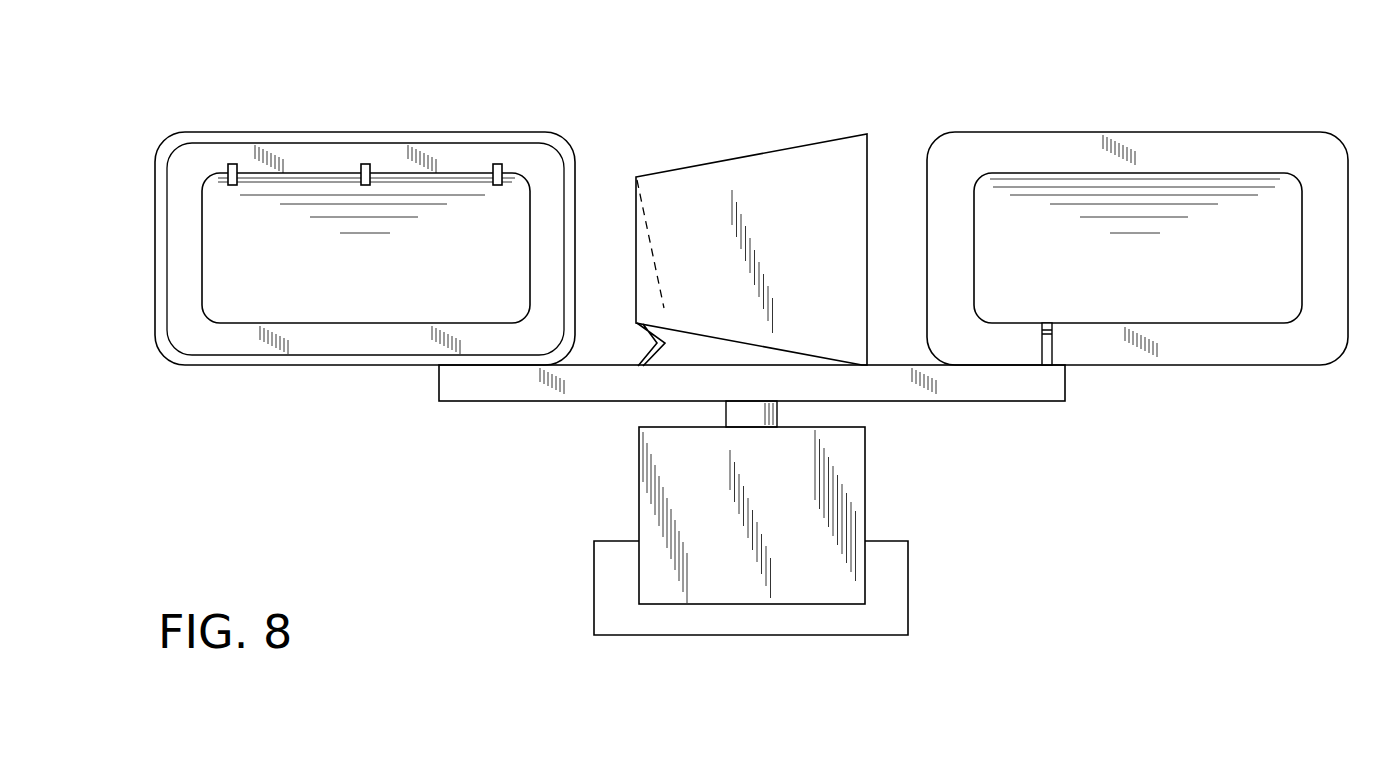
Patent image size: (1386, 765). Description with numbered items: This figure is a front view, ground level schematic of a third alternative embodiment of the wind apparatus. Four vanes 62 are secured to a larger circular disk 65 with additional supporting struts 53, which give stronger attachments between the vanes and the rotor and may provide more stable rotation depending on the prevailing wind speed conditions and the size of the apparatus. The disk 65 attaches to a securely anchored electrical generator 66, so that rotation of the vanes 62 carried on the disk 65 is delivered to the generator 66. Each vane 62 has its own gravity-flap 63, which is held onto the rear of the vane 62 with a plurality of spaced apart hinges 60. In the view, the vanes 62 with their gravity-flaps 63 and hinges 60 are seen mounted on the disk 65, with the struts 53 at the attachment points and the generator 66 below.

The supporting strut 53 is at (645, 354).
The hinge 60 is at (228, 167).
The vane 62 is at (307, 130).
The gravity-flap 63 is at (380, 267).
The circular disk 65 is at (573, 402).
The electrical generator 66 is at (865, 487).